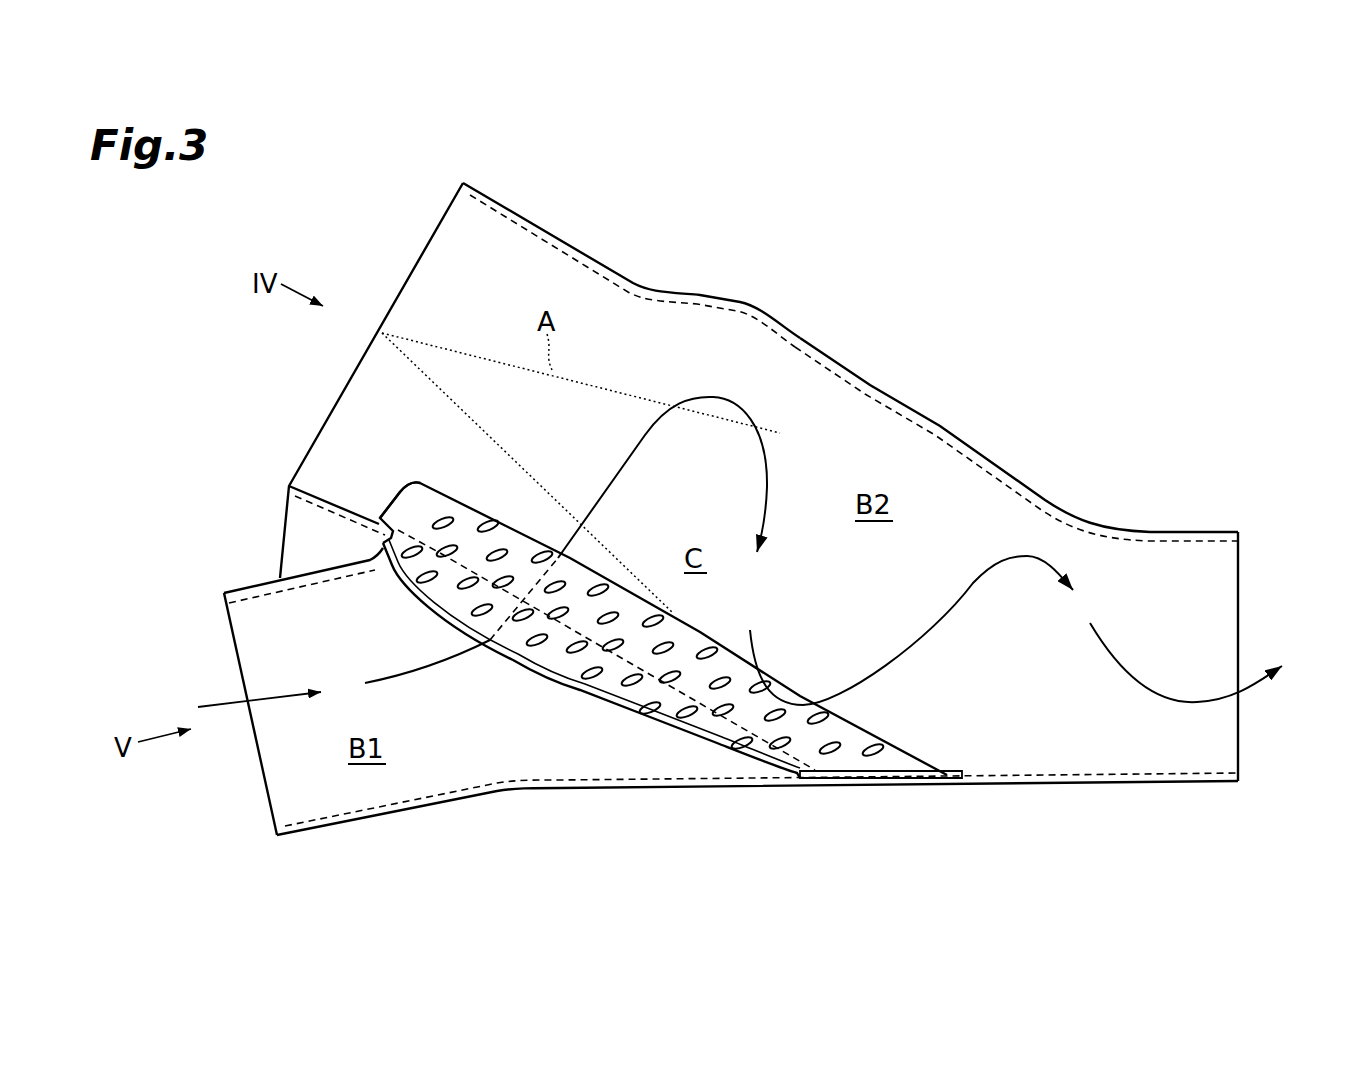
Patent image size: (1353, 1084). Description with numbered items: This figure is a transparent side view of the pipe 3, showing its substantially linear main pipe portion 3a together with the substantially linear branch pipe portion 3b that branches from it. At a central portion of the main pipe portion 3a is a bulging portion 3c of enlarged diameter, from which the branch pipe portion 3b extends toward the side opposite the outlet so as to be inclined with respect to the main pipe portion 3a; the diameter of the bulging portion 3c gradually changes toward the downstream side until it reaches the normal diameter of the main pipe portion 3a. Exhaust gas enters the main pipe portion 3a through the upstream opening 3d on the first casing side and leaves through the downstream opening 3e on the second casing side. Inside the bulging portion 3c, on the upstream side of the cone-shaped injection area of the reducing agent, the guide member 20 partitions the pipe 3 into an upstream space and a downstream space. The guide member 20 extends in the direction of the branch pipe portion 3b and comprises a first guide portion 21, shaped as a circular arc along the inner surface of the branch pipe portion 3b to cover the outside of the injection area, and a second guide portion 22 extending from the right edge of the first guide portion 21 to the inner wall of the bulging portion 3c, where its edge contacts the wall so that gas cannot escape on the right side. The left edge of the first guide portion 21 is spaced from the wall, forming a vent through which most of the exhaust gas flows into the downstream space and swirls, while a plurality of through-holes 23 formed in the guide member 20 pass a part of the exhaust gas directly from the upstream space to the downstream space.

The pipe 3 is at (737, 527).
The main pipe portion 3a is at (397, 813).
The branch pipe portion 3b is at (557, 233).
The bulging portion 3c is at (890, 393).
The upstream opening 3d is at (238, 663).
The downstream opening 3e is at (1238, 613).
The guide member 20 is at (671, 596).
The first guide portion 21 is at (457, 507).
The second guide portion 22 is at (560, 658).
The through-holes 23 is at (488, 521).